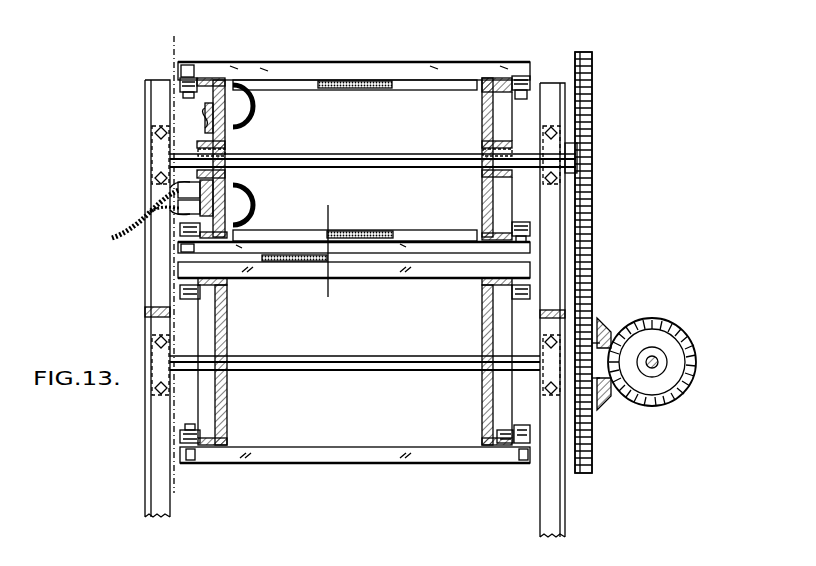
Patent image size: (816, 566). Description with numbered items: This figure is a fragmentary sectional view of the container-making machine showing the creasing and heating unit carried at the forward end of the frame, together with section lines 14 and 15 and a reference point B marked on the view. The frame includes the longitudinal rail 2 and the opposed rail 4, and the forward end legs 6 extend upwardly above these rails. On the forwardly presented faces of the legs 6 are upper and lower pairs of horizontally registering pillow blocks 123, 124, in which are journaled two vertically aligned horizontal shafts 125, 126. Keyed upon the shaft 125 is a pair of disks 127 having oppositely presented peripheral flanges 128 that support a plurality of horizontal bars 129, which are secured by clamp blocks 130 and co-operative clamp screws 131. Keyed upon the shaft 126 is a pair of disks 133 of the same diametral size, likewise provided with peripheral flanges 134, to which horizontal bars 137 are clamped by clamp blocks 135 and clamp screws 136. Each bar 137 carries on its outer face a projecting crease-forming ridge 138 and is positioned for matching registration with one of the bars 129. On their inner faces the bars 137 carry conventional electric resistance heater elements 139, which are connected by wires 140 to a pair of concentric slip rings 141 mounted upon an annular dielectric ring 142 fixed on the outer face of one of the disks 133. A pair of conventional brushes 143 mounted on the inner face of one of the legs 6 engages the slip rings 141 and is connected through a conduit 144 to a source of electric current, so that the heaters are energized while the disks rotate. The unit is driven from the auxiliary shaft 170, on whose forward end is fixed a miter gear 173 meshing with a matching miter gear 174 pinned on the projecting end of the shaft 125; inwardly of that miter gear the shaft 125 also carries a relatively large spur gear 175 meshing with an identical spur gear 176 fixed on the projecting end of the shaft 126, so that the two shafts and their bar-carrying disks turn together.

The longitudinal rail 2 is at (540, 314).
The rail 4 is at (145, 312).
The end legs 6 is at (145, 466).
The section line 14- 14 is at (172, 31).
The section line 15- 15 is at (330, 207).
The reference point B is at (312, 270).
The pillow blocks 123 is at (160, 396).
The pillow blocks 124 is at (152, 137).
The horizontal shaft 125 is at (348, 371).
The horizontal shaft 126 is at (357, 156).
The disks 127 is at (228, 400).
The peripheral flanges 128 is at (228, 446).
The horizontal bars 129 is at (276, 279).
The clamp blocks 130 is at (212, 300).
The clamp screws 131 is at (183, 421).
The disks 133 is at (228, 140).
The peripheral flanges 134 is at (216, 80).
The clamp blocks 135 is at (192, 78).
The clamp screws 136 is at (523, 100).
The horizontal bars 137 is at (313, 79).
The crease-forming ridge 138 is at (385, 62).
The electric resistance heater elements 139 is at (300, 90).
The wires 140 is at (250, 210).
The slip rings 141 is at (207, 117).
The annular dielectric ring 142 is at (226, 127).
The brushes 143 is at (180, 192).
The conduit 144 is at (112, 238).
The auxiliary shaft 170 is at (652, 362).
The miter gear 173 is at (670, 322).
The miter gear 174 is at (605, 320).
The spur gear 175 is at (593, 283).
The spur gear 176 is at (593, 78).